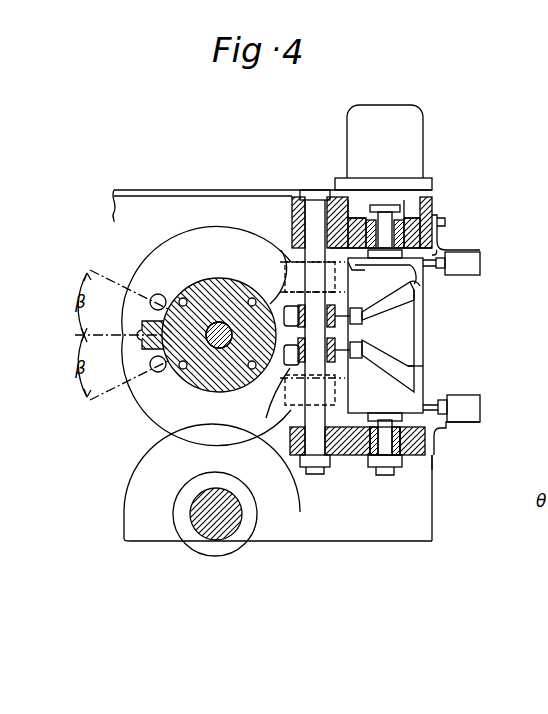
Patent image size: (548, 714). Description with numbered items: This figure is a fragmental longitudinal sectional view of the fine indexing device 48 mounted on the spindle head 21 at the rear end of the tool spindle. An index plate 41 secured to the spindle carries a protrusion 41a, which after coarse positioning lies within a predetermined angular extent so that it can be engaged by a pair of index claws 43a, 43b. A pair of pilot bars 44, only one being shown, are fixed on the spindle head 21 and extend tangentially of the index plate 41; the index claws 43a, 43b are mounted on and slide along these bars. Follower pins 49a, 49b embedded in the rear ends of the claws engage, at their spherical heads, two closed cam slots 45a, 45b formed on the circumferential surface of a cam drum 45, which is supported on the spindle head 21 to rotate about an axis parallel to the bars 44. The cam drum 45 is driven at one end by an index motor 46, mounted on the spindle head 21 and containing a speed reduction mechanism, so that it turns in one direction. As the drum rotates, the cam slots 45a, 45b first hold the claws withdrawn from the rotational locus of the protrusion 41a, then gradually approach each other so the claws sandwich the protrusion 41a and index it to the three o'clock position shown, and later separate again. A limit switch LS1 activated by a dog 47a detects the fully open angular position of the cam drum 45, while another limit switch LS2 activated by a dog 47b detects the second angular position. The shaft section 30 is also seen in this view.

The spindle head 21 is at (300, 190).
The lower shaft 30 is at (228, 528).
The index plate 41 is at (222, 286).
The protrusion 41a is at (224, 356).
The index claw 43a is at (283, 262).
The index claw 43b is at (278, 420).
The pilot bars 44 is at (330, 455).
The cam drum 45 is at (420, 340).
The cam slot 45a is at (423, 284).
The cam slot 45b is at (430, 370).
The index motor 46 is at (420, 134).
The dog 47a is at (385, 275).
The dog 47b is at (440, 434).
The fine indexing device 48 is at (448, 242).
The follower pin 49a is at (362, 316).
The follower pin 49b is at (358, 360).
The limit switch LS1 is at (482, 262).
The limit switch LS2 is at (468, 412).